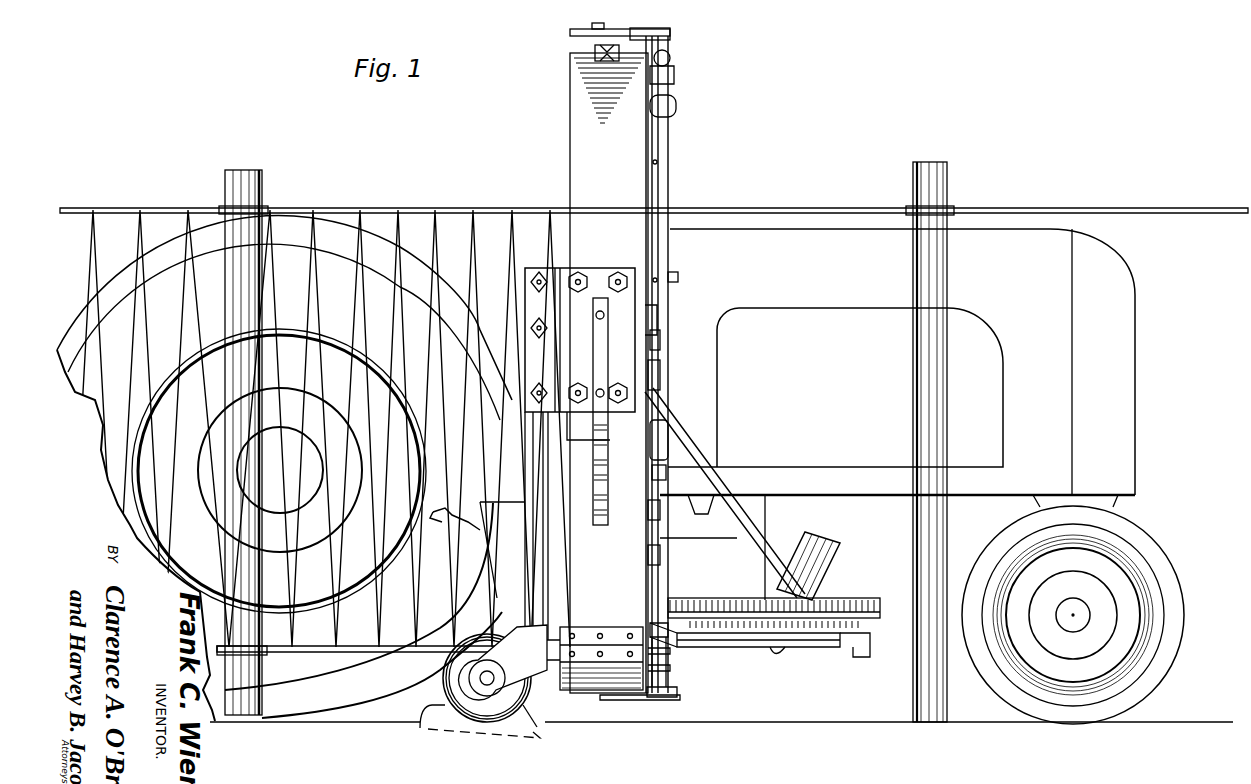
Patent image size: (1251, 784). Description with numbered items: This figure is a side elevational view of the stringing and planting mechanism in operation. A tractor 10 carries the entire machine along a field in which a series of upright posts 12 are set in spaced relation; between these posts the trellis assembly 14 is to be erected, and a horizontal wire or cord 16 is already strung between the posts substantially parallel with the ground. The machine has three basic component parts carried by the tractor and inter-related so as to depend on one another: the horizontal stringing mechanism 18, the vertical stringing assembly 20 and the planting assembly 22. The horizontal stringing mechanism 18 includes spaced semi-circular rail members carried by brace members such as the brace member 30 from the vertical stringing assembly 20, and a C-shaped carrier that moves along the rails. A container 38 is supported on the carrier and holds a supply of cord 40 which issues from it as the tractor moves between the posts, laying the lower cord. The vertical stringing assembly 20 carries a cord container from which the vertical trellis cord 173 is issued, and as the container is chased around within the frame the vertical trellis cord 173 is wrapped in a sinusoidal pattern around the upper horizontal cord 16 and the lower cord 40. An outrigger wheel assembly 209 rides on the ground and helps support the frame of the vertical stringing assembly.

The tractor 10 is at (1142, 256).
The upright posts 12 is at (247, 700).
The trellis assembly 14 is at (168, 197).
The horizontal wire 16 is at (1000, 208).
The vertical trellis cord 173 is at (439, 250).
The vertical stringing assembly 20 is at (686, 150).
The outrigger wheel assembly 209 is at (566, 561).
The brace member 30 is at (718, 487).
The container 38 is at (829, 524).
The horizontal stringing mechanism 18 is at (857, 580).
The planting assembly 22 is at (476, 552).
The cord 40 is at (357, 648).